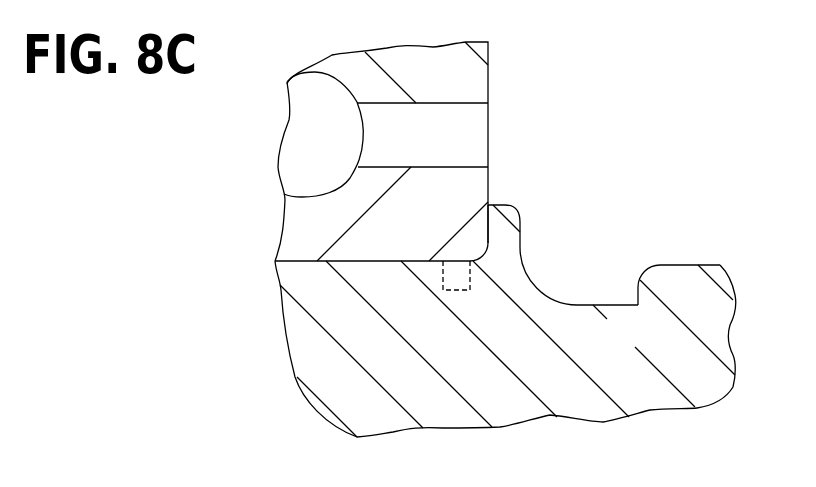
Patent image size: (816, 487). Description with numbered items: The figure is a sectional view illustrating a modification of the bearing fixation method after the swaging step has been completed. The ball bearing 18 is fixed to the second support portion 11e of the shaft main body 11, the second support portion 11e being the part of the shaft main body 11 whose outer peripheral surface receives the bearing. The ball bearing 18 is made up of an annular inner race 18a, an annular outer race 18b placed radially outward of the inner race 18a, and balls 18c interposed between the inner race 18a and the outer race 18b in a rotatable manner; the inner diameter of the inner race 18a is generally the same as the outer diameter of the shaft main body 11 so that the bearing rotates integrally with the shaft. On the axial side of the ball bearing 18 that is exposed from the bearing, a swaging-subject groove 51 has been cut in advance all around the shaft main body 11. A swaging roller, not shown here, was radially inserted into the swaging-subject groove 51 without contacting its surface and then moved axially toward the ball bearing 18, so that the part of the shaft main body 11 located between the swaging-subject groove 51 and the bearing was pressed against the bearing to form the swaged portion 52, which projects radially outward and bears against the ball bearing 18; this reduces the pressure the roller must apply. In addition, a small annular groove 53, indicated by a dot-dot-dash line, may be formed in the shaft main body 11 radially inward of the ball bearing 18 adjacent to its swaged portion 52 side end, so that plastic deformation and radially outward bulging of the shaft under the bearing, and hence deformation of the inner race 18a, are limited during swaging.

The ball bearing 18 is at (414, 151).
The inner race 18a is at (477, 182).
The outer race 18b is at (477, 80).
The balls 18c is at (352, 131).
The shaft main body 11 is at (515, 321).
The second support portion 11e is at (390, 260).
The swaging-subject groove 51 is at (613, 297).
The swaged portion 52 is at (513, 215).
The small annular groove 53 is at (452, 291).